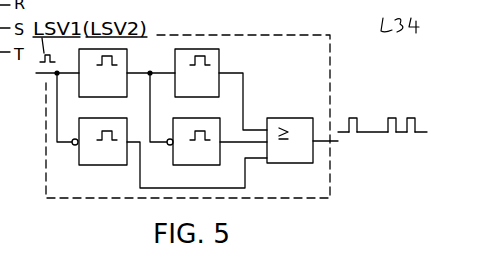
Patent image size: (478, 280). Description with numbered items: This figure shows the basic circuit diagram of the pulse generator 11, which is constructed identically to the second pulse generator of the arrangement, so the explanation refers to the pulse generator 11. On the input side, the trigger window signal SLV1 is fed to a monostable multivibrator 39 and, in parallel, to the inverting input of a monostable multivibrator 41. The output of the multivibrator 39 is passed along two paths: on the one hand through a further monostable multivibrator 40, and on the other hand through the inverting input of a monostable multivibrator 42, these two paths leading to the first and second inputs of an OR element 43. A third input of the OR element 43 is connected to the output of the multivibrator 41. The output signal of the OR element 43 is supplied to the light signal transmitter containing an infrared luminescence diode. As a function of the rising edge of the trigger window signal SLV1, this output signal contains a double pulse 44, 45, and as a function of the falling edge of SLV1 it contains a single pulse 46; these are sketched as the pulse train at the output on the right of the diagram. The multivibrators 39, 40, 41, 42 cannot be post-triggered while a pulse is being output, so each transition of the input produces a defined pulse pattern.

The pulse generator 11 is at (262, 35).
The monostable multivibrator 39 is at (128, 60).
The further monostable multivibrator 40 is at (190, 48).
The monostable multivibrator 41 is at (121, 119).
The monostable multivibrator 42 is at (207, 119).
The OR element 43 is at (283, 118).
The double pulse 44 is at (410, 118).
The double pulse 45 is at (390, 118).
The single pulse 46 is at (350, 118).